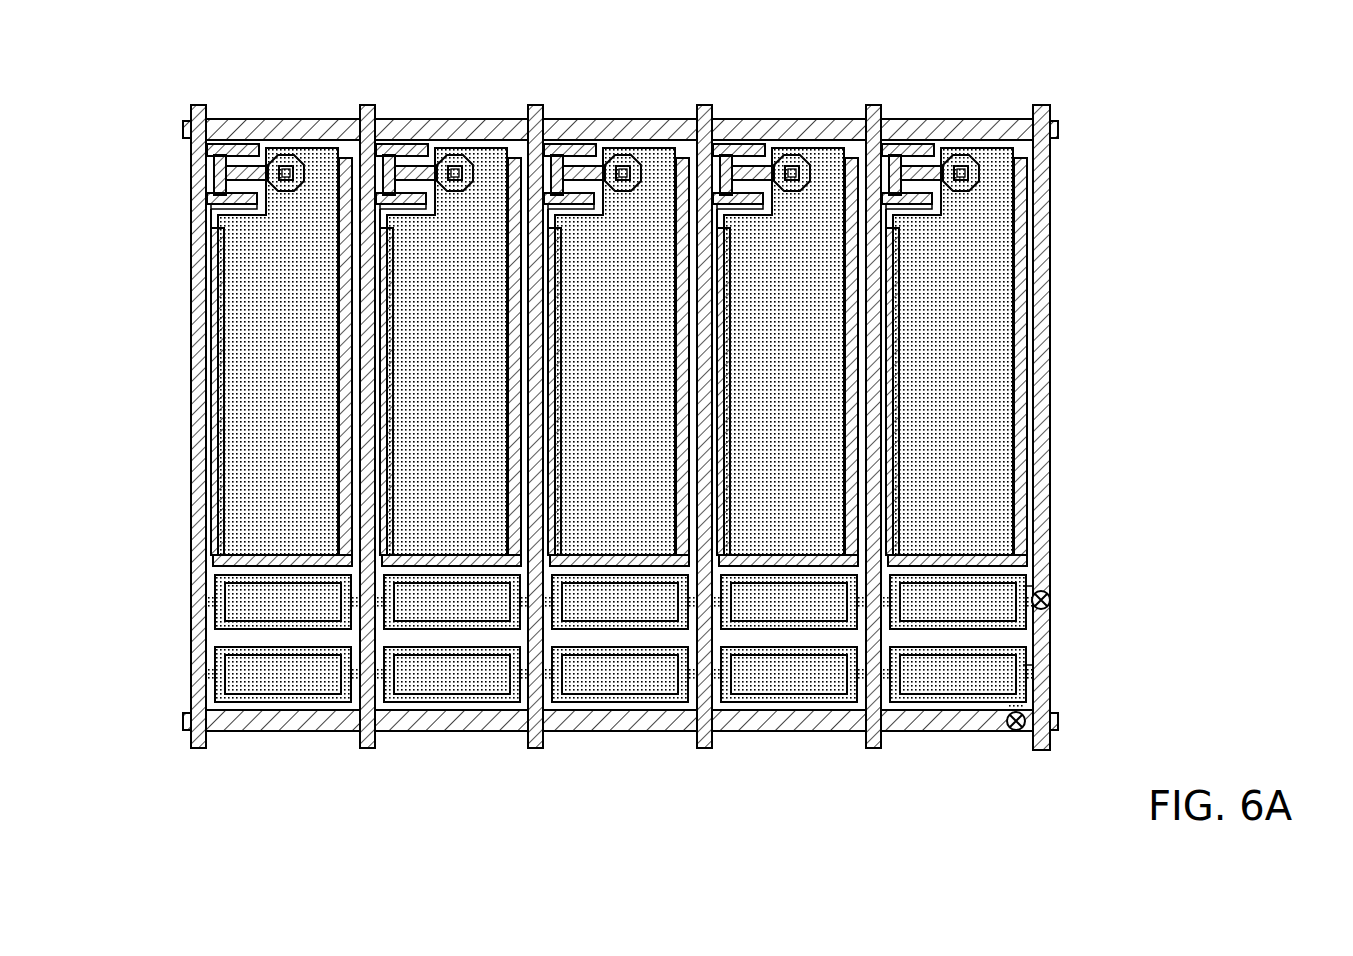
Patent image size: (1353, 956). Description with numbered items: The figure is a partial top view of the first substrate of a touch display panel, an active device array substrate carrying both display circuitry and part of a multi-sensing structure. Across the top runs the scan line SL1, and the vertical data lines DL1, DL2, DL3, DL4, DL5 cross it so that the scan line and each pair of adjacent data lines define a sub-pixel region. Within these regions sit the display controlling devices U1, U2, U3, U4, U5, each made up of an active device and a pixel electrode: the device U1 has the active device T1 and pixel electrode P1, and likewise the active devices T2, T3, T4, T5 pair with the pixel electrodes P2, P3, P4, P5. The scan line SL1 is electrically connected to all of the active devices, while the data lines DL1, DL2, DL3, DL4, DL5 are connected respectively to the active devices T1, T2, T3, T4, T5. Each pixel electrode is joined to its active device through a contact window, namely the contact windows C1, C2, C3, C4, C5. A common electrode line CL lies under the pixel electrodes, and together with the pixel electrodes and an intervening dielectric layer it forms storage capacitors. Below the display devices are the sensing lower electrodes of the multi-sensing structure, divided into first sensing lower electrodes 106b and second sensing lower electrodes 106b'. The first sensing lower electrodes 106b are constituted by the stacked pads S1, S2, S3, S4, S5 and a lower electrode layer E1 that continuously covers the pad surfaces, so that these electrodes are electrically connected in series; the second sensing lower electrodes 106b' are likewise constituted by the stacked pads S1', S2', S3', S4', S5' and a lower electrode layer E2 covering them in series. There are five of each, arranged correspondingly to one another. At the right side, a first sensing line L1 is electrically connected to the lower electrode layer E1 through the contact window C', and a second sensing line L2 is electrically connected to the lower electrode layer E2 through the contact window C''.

The scan line SL1 is at (176, 118).
The data line DL1 is at (191, 97).
The data line DL2 is at (360, 97).
The data line DL3 is at (528, 97).
The data line DL4 is at (697, 97).
The data line DL5 is at (866, 97).
The display controlling device U1 is at (272, 294).
The display controlling device U2 is at (441, 294).
The display controlling device U3 is at (609, 294).
The display controlling device U4 is at (778, 294).
The display controlling device U5 is at (947, 294).
The active device T1 is at (229, 146).
The active device T2 is at (398, 146).
The active device T3 is at (566, 146).
The active device T4 is at (735, 146).
The active device T5 is at (904, 146).
The pixel electrode P1 is at (275, 147).
The pixel electrode P2 is at (444, 147).
The pixel electrode P3 is at (612, 147).
The pixel electrode P4 is at (781, 147).
The pixel electrode P5 is at (950, 147).
The contact window C1 is at (277, 172).
The contact window C2 is at (446, 172).
The contact window C3 is at (614, 172).
The contact window C4 is at (783, 172).
The contact window C5 is at (952, 172).
The common electrode line CL is at (205, 232).
The first sensing line L1 is at (1035, 97).
The second sensing line L2 is at (1050, 716).
The stacked pad S1 is at (283, 675).
The stacked pad S2 is at (452, 675).
The stacked pad S3 is at (620, 675).
The stacked pad S4 is at (789, 675).
The stacked pad S5 is at (958, 675).
The stacked pad S1' is at (283, 711).
The stacked pad S2' is at (452, 711).
The stacked pad S3' is at (620, 711).
The stacked pad S4' is at (789, 711).
The stacked pad S5' is at (958, 711).
The first sensing lower electrodes 106b is at (620, 710).
The second sensing lower electrodes 106b' is at (620, 746).
The lower electrode layer E1 is at (1045, 567).
The lower electrode layer E2 is at (1045, 652).
The contact window C' is at (1075, 605).
The contact window C'' is at (1032, 756).